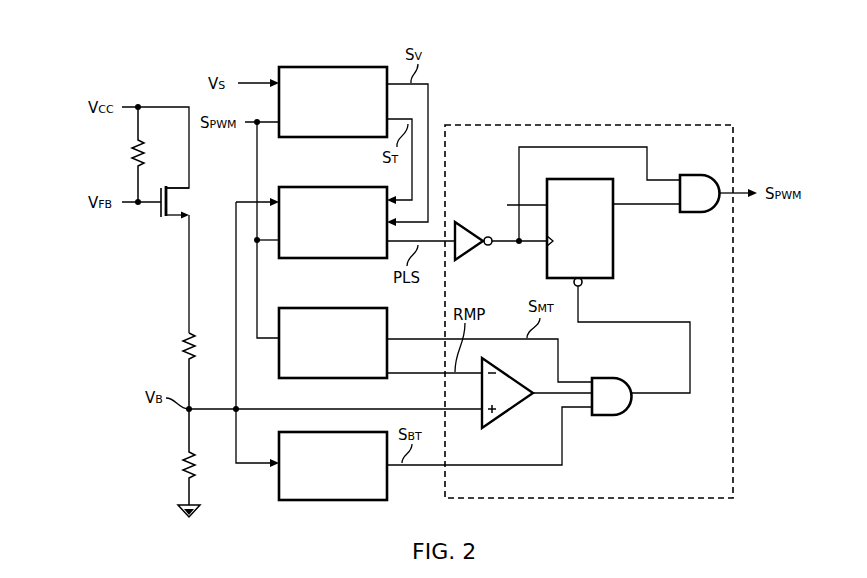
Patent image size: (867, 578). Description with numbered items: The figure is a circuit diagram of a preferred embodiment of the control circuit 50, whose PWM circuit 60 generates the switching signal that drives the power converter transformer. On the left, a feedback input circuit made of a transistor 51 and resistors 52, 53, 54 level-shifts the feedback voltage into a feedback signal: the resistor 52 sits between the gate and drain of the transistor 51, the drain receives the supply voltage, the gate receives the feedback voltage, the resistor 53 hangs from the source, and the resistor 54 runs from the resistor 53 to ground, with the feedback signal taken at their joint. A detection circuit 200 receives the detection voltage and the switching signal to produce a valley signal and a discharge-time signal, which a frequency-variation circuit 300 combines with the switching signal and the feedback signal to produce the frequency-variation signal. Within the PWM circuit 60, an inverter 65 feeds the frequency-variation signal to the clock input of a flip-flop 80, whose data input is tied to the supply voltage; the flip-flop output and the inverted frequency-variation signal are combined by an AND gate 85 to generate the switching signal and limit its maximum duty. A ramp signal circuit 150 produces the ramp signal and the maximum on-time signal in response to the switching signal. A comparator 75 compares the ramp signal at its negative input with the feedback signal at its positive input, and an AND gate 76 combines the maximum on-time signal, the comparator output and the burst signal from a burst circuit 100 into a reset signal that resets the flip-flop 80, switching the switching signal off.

The control circuit 50 is at (796, 66).
The transistor 51 is at (190, 259).
The resistor 52 is at (148, 154).
The resistor 53 is at (176, 371).
The resistor 54 is at (179, 463).
The PWM circuit 60 is at (600, 301).
The inverter 65 is at (474, 249).
The comparator 75 is at (509, 393).
The AND gate 76 is at (612, 386).
The flip-flop 80 is at (580, 222).
The AND gate 85 is at (700, 182).
The burst circuit 100 is at (333, 456).
The ramp signal circuit 150 is at (333, 331).
The detection circuit 200 is at (333, 92).
The frequency-variation circuit 300 is at (333, 211).